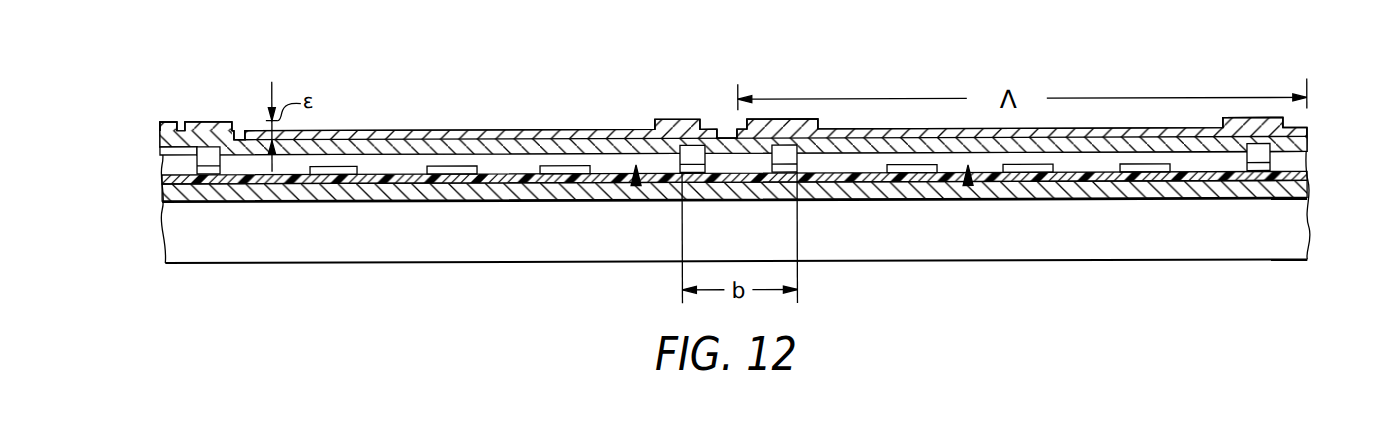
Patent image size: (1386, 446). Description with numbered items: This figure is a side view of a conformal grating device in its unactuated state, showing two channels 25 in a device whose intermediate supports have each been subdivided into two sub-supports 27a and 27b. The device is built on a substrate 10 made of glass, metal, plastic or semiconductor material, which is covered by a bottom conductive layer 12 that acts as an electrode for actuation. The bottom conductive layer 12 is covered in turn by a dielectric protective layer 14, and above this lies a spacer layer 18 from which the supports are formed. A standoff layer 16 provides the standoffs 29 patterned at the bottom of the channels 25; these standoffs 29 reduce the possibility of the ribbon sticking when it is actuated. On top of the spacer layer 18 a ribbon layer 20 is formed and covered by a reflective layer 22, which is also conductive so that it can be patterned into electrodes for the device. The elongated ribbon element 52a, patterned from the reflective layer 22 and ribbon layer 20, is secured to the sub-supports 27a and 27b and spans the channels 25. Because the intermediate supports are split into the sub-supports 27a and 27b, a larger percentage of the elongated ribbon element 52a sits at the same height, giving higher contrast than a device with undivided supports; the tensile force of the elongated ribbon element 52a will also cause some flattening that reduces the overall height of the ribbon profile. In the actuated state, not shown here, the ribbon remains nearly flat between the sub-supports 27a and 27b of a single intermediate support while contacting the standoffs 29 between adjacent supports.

The substrate 10 is at (176, 243).
The bottom conductive layer 12 is at (172, 197).
The dielectric protective layer 14 is at (161, 178).
The standoff layer 16 is at (190, 172).
The spacer layer 18 is at (184, 161).
The ribbon layer 20 is at (160, 137).
The reflective layer 22 is at (181, 131).
The channel 25 is at (636, 186).
The sub-support 27a is at (208, 152).
The sub-support 27b is at (693, 158).
The standoff 29 is at (443, 167).
The elongated ribbon element 52a is at (613, 132).